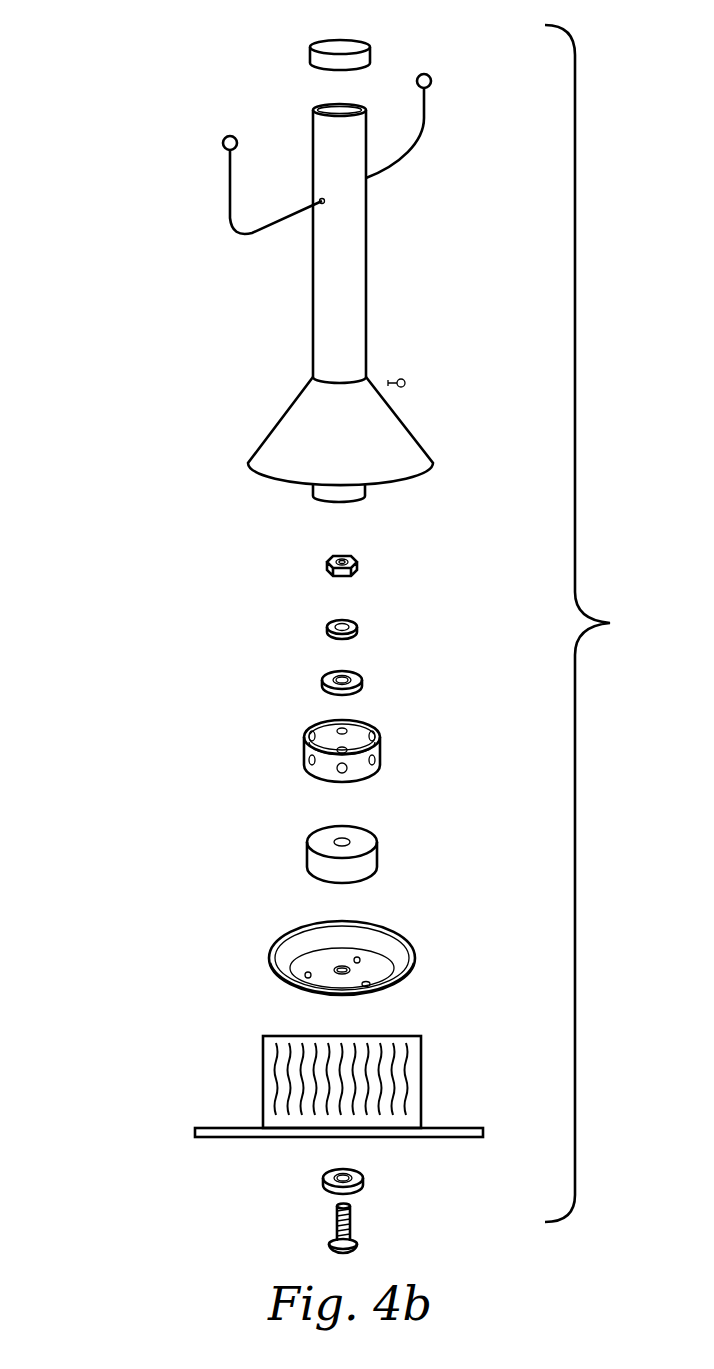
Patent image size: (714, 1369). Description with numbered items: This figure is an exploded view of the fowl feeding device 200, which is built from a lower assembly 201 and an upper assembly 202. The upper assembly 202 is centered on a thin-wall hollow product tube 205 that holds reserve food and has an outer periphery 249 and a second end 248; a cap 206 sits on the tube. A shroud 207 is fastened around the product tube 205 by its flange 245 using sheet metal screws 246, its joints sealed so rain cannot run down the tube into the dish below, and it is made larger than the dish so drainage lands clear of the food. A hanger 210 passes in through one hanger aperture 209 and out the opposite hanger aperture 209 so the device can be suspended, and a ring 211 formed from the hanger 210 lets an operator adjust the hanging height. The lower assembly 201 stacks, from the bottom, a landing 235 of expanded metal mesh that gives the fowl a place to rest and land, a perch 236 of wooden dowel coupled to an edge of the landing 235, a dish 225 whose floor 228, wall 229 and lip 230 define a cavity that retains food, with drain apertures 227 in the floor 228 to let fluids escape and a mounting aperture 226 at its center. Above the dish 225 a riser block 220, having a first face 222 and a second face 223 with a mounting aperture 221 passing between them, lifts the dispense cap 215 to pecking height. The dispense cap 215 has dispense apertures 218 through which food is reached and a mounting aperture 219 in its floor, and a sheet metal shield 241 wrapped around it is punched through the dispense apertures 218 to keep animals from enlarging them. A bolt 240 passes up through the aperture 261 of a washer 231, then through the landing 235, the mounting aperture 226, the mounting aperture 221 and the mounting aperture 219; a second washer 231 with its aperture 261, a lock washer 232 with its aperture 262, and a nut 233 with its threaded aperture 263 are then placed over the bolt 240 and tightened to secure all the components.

The fowl feeding device 200 is at (158, 100).
The lower assembly 201 is at (163, 958).
The upper assembly 202 is at (142, 357).
The product tube 205 is at (353, 234).
The cap 206 is at (331, 43).
The shroud 207 is at (359, 441).
The hanger aperture 209 is at (322, 198).
The hanger 210 is at (229, 188).
The ring 211 is at (431, 79).
The dispense cap 215 is at (270, 745).
The dispense apertures 218 is at (345, 772).
The mounting aperture 219 is at (340, 750).
The riser block 220 is at (292, 866).
The mounting aperture 221 is at (337, 838).
The first face 222 is at (368, 838).
The second face 223 is at (360, 878).
The dish 225 is at (268, 976).
The mounting aperture 226 is at (340, 965).
The drain apertures 227 is at (307, 972).
The floor 228 is at (372, 958).
The wall 229 is at (402, 962).
The lip 230 is at (416, 972).
The washer 231 is at (362, 683).
The lock washer 232 is at (358, 630).
The nut 233 is at (358, 566).
The landing 235 is at (275, 1090).
The perch 236 is at (455, 1128).
The bolt 240 is at (333, 1212).
The shield 241 is at (325, 770).
The flange 245 is at (367, 378).
The sheet metal screws 246 is at (407, 383).
The second end 248 is at (347, 500).
The outer periphery 249 is at (341, 286).
The aperture 261 is at (342, 678).
The aperture 262 is at (340, 623).
The threaded aperture 263 is at (340, 559).